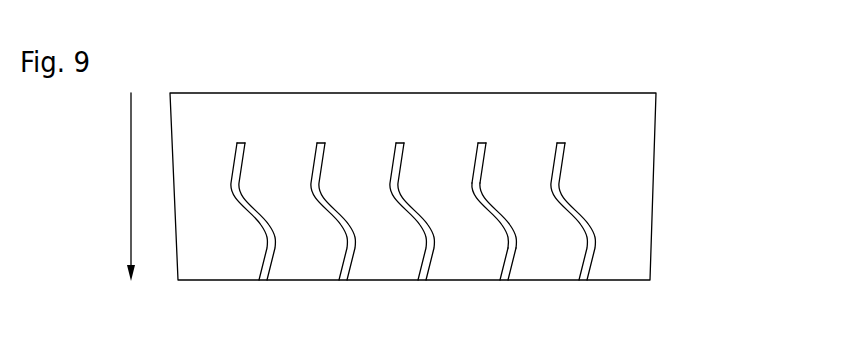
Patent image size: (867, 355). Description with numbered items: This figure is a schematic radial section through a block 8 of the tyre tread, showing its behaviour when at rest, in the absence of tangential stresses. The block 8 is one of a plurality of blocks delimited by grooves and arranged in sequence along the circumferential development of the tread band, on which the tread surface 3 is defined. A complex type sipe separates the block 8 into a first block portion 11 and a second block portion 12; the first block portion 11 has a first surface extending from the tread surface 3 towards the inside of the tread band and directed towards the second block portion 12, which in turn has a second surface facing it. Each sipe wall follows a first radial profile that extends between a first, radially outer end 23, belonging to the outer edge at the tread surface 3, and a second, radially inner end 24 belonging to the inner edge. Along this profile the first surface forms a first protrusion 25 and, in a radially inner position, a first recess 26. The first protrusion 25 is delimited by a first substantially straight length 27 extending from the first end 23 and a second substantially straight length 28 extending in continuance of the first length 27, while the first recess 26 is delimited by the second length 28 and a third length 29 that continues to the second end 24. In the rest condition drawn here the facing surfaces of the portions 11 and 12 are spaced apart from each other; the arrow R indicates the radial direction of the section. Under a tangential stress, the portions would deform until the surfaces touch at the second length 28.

The tread surface 3 is at (221, 282).
The block 8 is at (636, 134).
The first block portion 11 is at (452, 265).
The second block portion 12 is at (548, 263).
The first radially outer end 23 is at (502, 279).
The second radially inner end 24 is at (479, 141).
The first protrusion 25 is at (507, 238).
The first recess 26 is at (473, 187).
The first substantially straight length 27 is at (503, 257).
The second substantially straight length 28 is at (489, 216).
The third length 29 is at (476, 170).
The direction of rotation R is at (130, 167).